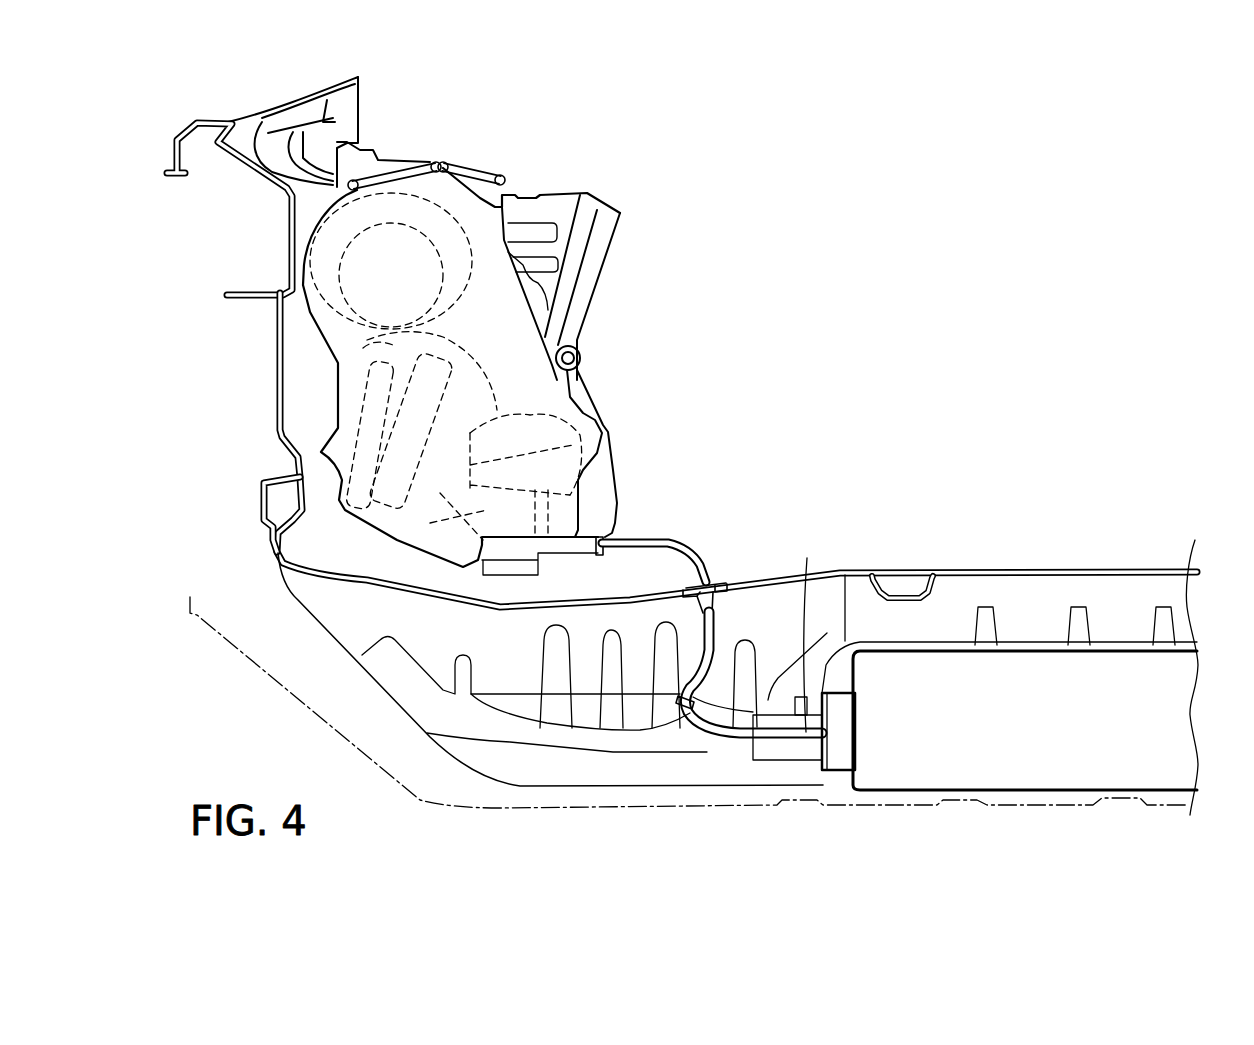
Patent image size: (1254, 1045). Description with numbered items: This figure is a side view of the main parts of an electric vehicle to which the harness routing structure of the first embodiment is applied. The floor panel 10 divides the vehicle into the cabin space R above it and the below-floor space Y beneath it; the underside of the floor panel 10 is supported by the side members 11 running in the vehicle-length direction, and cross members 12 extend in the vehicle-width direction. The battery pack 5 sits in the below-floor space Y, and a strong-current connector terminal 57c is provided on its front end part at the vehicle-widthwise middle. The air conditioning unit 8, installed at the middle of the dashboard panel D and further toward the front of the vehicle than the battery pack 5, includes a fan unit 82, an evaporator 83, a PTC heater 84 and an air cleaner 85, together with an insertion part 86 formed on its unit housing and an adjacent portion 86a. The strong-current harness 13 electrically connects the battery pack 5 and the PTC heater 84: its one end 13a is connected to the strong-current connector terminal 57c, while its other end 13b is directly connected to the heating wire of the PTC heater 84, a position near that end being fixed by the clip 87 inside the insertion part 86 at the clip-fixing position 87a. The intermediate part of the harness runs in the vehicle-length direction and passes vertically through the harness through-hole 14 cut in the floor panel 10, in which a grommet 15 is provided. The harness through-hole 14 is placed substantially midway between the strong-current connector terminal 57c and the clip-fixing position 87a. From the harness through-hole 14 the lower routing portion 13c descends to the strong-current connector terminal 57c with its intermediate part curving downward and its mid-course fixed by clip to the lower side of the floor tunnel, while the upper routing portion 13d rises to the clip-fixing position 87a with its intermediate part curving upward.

The battery pack 5 is at (1018, 740).
The air conditioning unit 8 is at (597, 183).
The floor panel 10 is at (1118, 570).
The side member 11 is at (580, 770).
The cross member 12 is at (943, 573).
The strong-current harness 13 is at (712, 538).
The one end of the strong-current harness 13a is at (813, 634).
The other end of the strong-current harness 13b is at (543, 513).
The lower routing portion 13c is at (722, 730).
The upper routing portion 13d is at (660, 538).
The harness through-hole 14 is at (715, 597).
The grommet 15 is at (722, 583).
The strong-current connector terminal 57c is at (825, 732).
The fan unit 82 is at (400, 245).
The evaporator 83 is at (337, 501).
The PTC heater 84 is at (528, 445).
The air cleaner 85 is at (353, 417).
The insertion part 86 is at (610, 540).
The arm portion 86a is at (603, 448).
The clip 87 is at (597, 556).
The clip-fixing position 87a is at (607, 552).
The dashboard panel D is at (283, 355).
The cabin space R is at (834, 303).
The below-floor space Y is at (598, 647).